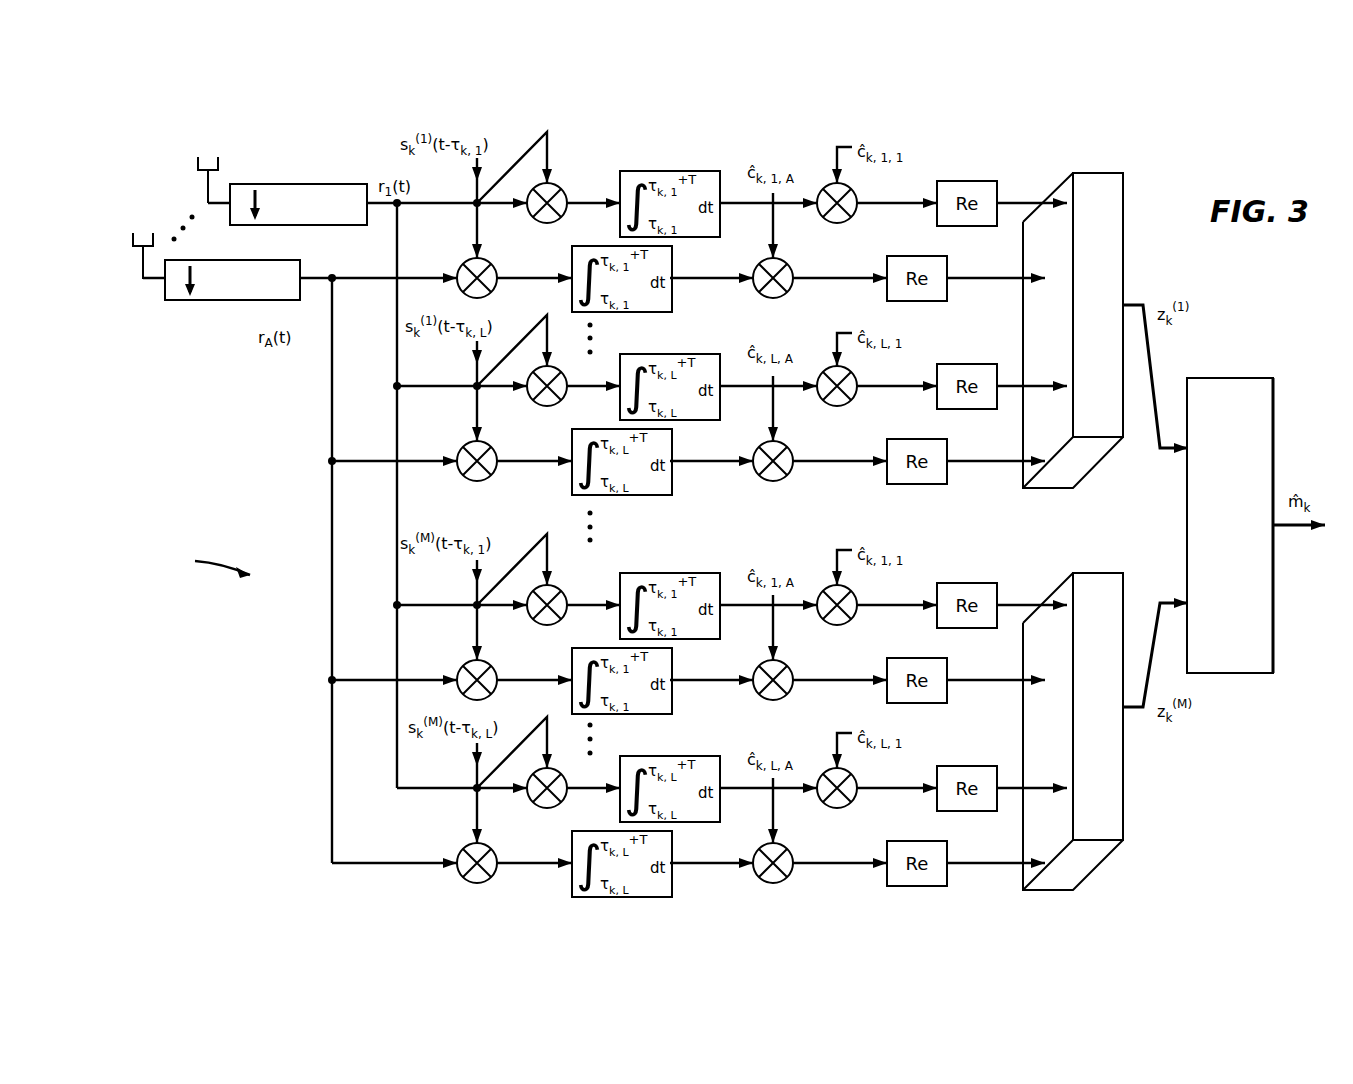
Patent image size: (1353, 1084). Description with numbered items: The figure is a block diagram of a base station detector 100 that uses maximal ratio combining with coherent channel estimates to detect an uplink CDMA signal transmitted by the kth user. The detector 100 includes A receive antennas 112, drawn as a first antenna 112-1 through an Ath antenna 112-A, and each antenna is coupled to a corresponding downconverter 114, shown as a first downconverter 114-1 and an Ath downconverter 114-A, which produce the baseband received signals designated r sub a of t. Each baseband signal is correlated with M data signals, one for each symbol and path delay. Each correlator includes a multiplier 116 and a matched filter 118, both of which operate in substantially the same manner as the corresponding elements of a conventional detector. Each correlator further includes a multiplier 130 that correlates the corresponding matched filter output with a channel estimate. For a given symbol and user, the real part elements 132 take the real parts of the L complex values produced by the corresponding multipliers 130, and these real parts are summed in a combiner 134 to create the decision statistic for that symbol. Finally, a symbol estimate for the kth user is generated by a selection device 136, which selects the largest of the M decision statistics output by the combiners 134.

The base station detector 100 is at (283, 531).
The receive antenna 112 is at (167, 203).
The first receive antenna 112-1 is at (205, 157).
The Ath receive antenna 112-A is at (136, 233).
The downconverter 114 is at (253, 241).
The first downconverter 114-1 is at (270, 184).
The Ath downconverter 114-A is at (210, 300).
The multiplier 116 is at (557, 183).
The matched filter 118 is at (690, 151).
The multiplier 130 is at (842, 223).
The real part element 132 is at (968, 181).
The combiner 134 is at (1095, 173).
The selection device 136 is at (1273, 417).